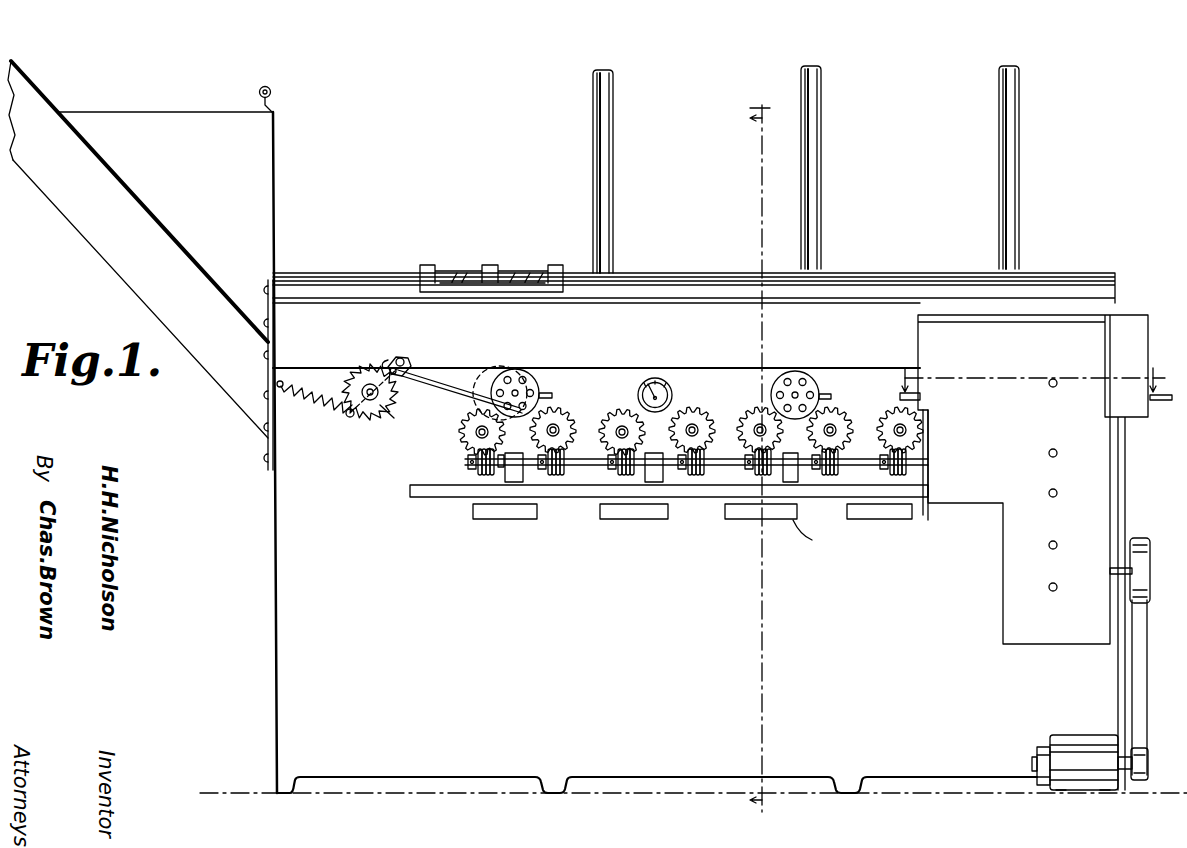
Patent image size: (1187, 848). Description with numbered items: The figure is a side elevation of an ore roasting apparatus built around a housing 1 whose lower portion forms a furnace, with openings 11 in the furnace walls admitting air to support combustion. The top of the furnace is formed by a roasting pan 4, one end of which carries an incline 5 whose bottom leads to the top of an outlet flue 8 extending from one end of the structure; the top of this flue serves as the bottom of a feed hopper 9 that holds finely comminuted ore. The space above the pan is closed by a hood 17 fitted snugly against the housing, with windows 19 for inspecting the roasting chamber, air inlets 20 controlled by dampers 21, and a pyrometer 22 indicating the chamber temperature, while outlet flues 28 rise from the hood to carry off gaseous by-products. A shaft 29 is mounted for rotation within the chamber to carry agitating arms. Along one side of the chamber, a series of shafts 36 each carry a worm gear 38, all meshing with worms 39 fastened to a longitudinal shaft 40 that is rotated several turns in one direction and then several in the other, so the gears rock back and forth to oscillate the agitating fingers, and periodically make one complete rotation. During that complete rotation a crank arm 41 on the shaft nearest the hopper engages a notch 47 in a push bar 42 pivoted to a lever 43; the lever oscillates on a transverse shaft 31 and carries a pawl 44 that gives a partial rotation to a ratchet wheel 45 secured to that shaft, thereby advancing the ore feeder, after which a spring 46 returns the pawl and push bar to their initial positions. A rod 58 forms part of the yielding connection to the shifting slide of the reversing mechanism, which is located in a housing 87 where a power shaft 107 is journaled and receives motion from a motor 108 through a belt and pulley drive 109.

The housing 1 is at (303, 675).
The roasting pan 4 is at (760, 463).
The incline 5 is at (1025, 378).
The outlet flue 8 is at (222, 378).
The feed hopper 9 is at (255, 187).
The openings 11 is at (490, 512).
The hood 17 is at (660, 283).
The windows 19 is at (455, 270).
The air inlets 20 is at (515, 385).
The dampers 21 is at (545, 392).
The pyrometer 22 is at (656, 378).
The outlet flue 28 is at (610, 162).
The shaft 29 is at (1053, 591).
The transverse shaft 31 is at (393, 415).
The shafts 36 is at (478, 440).
The worm gear 38 is at (468, 428).
The worms 39 is at (485, 472).
The longitudinal shaft 40 is at (580, 467).
The crank arm 41 is at (516, 450).
The push bar 42 is at (430, 372).
The lever 43 is at (400, 357).
The pawl 44 is at (393, 366).
The ratchet wheel 45 is at (365, 420).
The spring 46 is at (318, 405).
The notch 47 is at (488, 385).
The rod 58 is at (1162, 402).
The housing 87 is at (1008, 598).
The power shaft 107 is at (1152, 572).
The motor 108 is at (1065, 742).
The belt and pulley drive 109 is at (1137, 680).